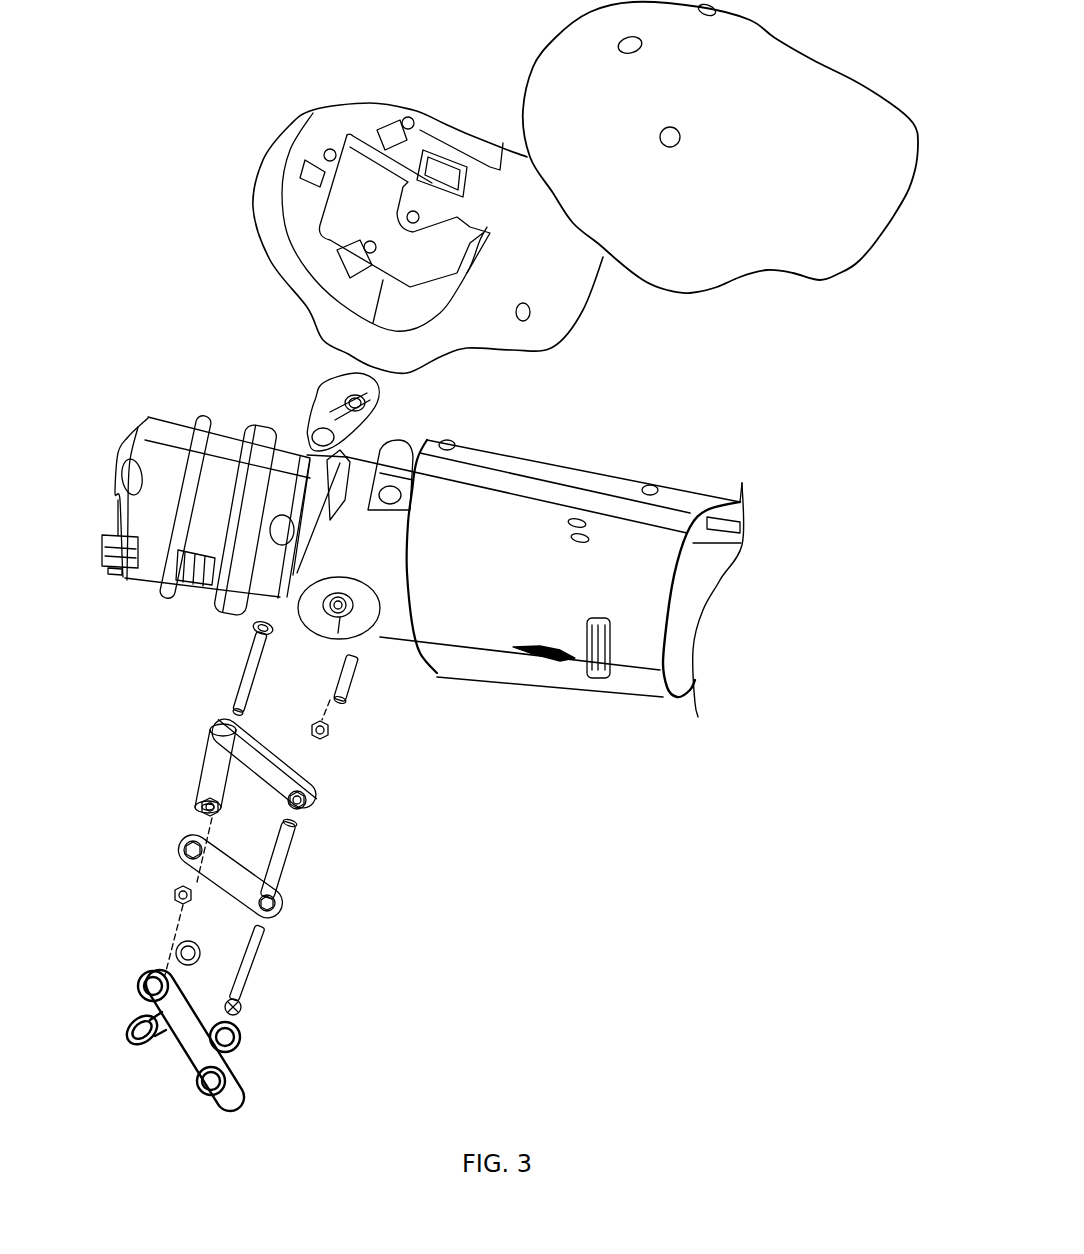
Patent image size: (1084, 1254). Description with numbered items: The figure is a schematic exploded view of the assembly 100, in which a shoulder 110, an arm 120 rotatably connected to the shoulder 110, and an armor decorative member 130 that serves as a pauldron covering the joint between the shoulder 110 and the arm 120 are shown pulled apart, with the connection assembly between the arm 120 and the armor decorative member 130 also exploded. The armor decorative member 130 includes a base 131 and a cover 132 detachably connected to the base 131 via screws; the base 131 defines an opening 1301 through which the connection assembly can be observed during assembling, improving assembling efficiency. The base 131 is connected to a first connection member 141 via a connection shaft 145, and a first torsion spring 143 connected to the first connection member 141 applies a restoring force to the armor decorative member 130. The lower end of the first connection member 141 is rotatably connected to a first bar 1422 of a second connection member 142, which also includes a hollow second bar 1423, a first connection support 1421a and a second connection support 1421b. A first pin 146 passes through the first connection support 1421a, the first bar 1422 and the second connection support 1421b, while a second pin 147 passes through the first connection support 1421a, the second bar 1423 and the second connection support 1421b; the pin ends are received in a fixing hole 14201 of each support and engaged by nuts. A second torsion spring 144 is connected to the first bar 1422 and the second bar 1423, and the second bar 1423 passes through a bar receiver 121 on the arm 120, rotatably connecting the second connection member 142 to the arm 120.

The assembly 100 is at (708, 915).
The shoulder 110 is at (162, 470).
The arm 120 is at (517, 517).
The bar receiver 121 is at (397, 470).
The armor decorative member 130 is at (752, 325).
The base 131 is at (555, 332).
The opening 1301 is at (362, 170).
The cover 132 is at (648, 265).
The first connection member 141 is at (322, 390).
The second connection member 142 is at (465, 750).
The first connection support 1421a is at (293, 767).
The second connection support 1421b is at (293, 880).
The fixing hole 14201 is at (297, 797).
The first bar 1422 is at (305, 790).
The second bar 1423 is at (287, 843).
The first torsion spring 143 is at (185, 945).
The second torsion spring 144 is at (240, 1032).
The connection shaft 145 is at (353, 672).
The first pin 146 is at (252, 662).
The second pin 147 is at (250, 963).